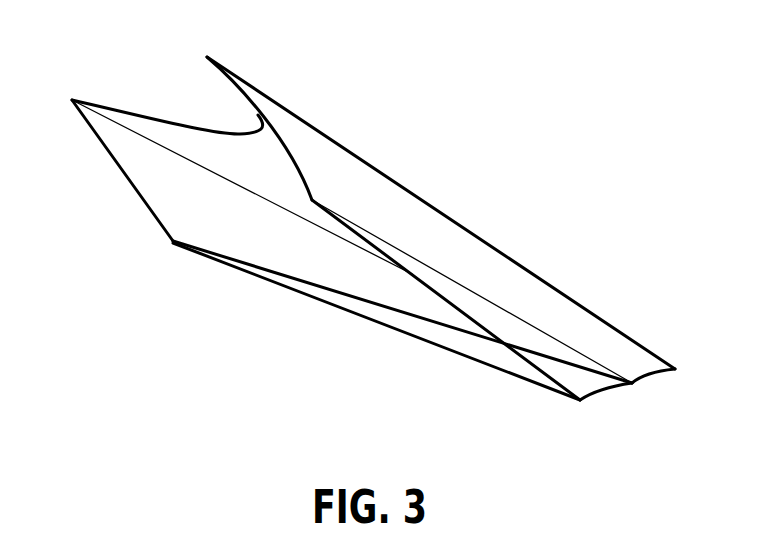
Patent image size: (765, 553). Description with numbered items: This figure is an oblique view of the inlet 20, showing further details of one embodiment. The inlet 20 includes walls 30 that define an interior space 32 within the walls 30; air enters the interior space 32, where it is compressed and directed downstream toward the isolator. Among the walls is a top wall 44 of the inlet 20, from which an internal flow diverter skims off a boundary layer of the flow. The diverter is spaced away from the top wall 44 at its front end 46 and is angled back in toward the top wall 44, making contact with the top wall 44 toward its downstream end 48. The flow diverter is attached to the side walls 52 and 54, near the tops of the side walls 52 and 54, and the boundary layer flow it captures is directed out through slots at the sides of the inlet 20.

The inlet 20 is at (123, 72).
The walls 30 is at (120, 185).
The interior space 32 is at (134, 149).
The top wall 44 is at (195, 147).
The front end 46 is at (175, 256).
The downstream end 48 is at (609, 405).
The side wall 52 is at (365, 185).
The side wall 54 is at (190, 232).